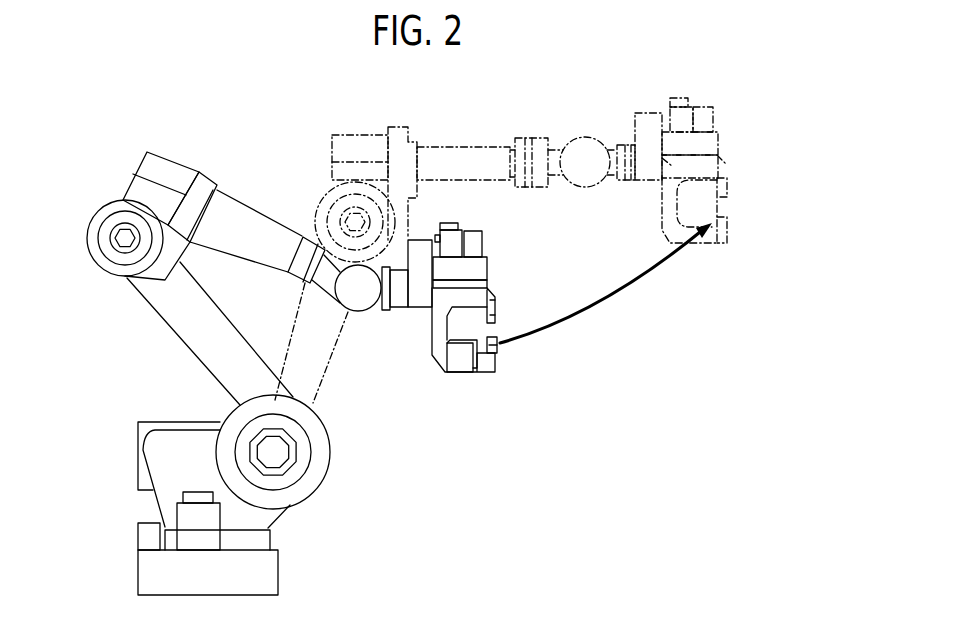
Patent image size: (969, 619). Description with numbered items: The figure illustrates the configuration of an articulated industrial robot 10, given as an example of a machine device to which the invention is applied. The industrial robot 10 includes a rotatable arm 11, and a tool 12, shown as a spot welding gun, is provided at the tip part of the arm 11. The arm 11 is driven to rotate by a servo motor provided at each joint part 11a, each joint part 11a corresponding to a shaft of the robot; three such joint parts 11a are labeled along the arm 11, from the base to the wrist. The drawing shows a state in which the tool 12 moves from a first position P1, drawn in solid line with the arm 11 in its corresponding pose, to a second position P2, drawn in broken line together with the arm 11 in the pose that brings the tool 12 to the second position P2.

The industrial robot 10 is at (536, 98).
The arm 11 is at (170, 337).
The joint part 11a is at (99, 217).
The tool 12 is at (458, 380).
The first position P1 is at (518, 366).
The second position P2 is at (736, 121).